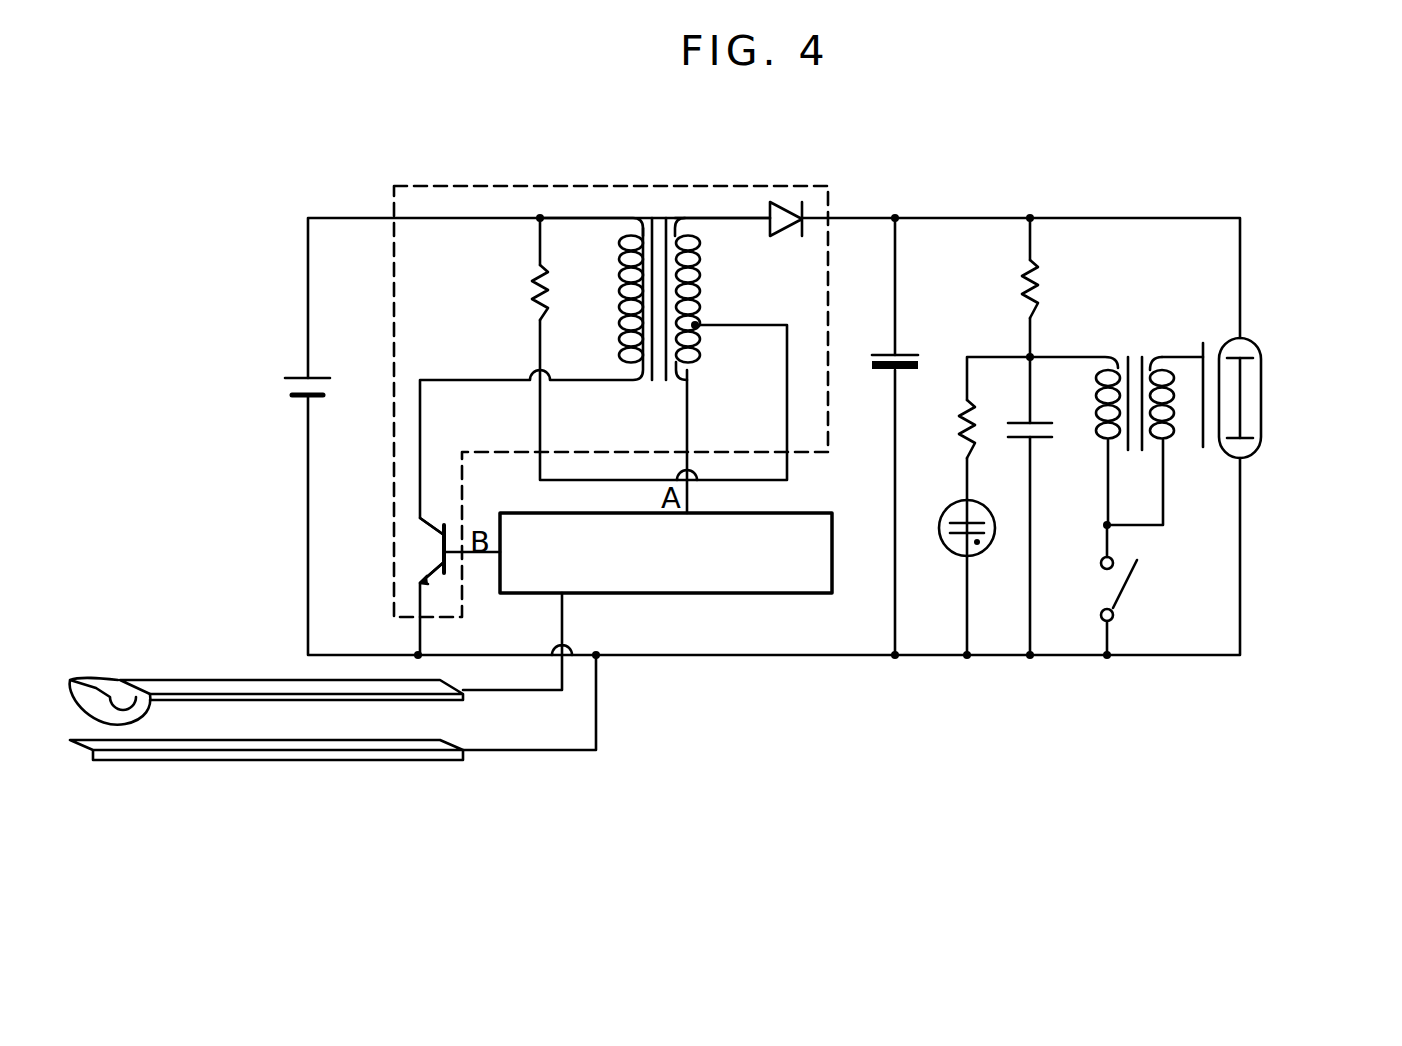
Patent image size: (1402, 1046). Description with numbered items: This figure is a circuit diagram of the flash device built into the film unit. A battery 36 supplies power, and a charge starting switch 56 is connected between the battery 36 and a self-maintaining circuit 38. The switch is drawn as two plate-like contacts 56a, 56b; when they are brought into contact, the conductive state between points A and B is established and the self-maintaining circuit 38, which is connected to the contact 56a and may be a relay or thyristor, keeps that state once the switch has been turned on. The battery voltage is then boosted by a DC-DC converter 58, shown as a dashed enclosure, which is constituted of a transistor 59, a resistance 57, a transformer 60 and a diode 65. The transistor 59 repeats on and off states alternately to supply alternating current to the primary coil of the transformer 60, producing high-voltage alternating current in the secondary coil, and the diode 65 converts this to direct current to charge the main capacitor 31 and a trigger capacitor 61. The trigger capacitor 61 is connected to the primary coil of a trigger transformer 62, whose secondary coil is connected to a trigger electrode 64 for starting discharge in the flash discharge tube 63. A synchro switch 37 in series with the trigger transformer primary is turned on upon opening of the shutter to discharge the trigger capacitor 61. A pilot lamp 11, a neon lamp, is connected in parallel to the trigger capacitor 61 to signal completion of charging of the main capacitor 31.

The pilot lamp 11 is at (950, 549).
The main capacitor 31 is at (905, 352).
The battery 36 is at (285, 383).
The synchro switch 37 is at (1125, 586).
The self-maintaining circuit 38 is at (683, 593).
The charge starting switch 56 is at (266, 784).
The contact 56a is at (380, 692).
The contact 56b is at (410, 836).
The resistance 57 is at (538, 290).
The DC-DC converter 58 is at (500, 186).
The transistor 59 is at (440, 539).
The transformer 60 is at (660, 218).
The trigger capacitor 61 is at (1043, 440).
The trigger transformer 62 is at (1133, 357).
The flash discharge tube 63 is at (1261, 405).
The trigger electrode 64 is at (1198, 428).
The diode 65 is at (790, 210).